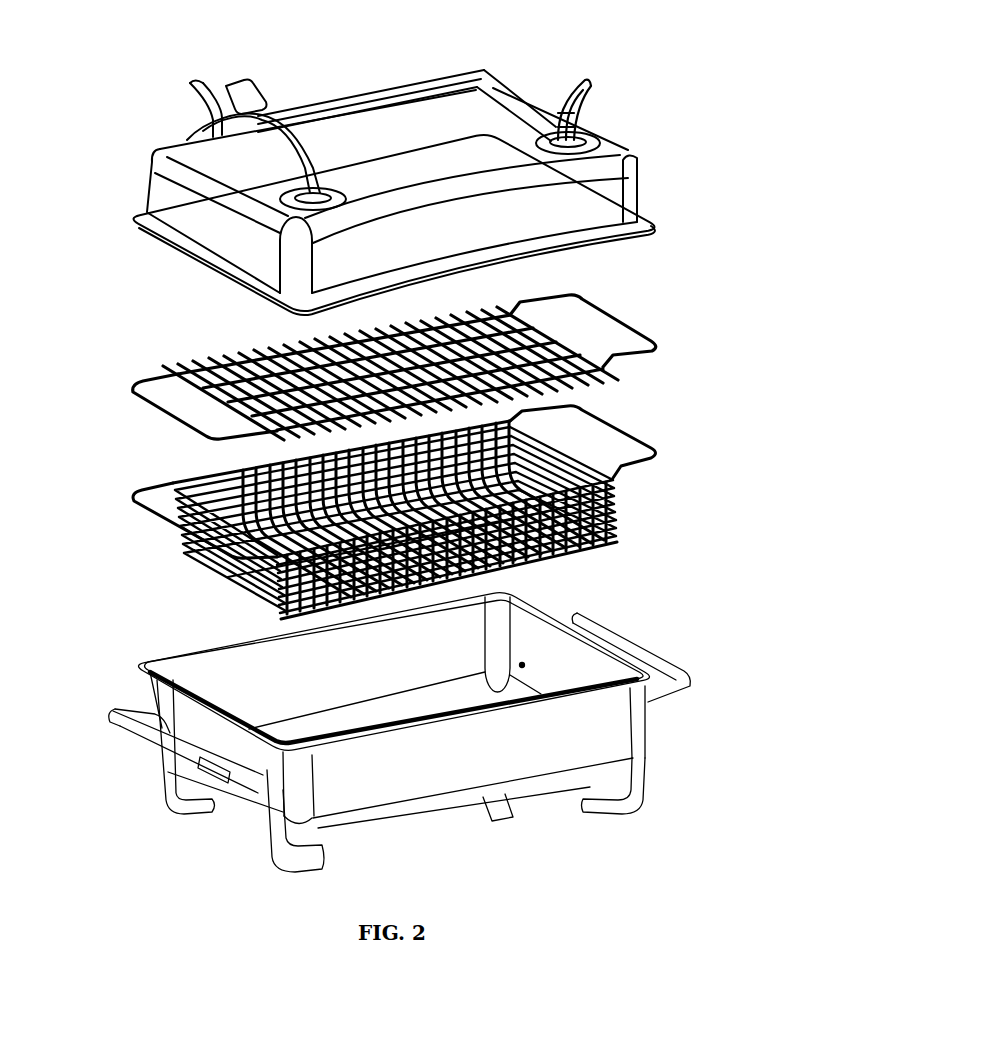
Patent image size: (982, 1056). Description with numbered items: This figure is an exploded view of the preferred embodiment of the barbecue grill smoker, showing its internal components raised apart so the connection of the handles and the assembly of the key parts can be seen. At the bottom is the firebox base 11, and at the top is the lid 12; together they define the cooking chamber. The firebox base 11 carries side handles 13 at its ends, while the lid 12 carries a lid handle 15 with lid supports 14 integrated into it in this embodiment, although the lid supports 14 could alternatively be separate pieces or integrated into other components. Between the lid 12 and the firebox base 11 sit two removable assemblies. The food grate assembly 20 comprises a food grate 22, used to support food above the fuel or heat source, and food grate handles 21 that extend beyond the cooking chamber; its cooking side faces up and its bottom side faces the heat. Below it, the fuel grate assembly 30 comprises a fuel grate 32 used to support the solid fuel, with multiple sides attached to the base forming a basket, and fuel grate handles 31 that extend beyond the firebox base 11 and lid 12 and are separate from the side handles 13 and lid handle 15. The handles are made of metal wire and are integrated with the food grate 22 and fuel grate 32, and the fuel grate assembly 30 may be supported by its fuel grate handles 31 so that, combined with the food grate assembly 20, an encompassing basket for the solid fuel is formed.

The firebox base 11 is at (410, 812).
The lid 12 is at (641, 192).
The side handle 13 is at (138, 737).
The lid support 14 is at (594, 82).
The lid handle 15 is at (388, 92).
The food grate assembly 20 is at (140, 338).
The food grate handles 21 is at (653, 337).
The food grate 22 is at (625, 383).
The fuel grate assembly 30 is at (135, 465).
The fuel grate handles 31 is at (653, 455).
The fuel grate 32 is at (625, 507).